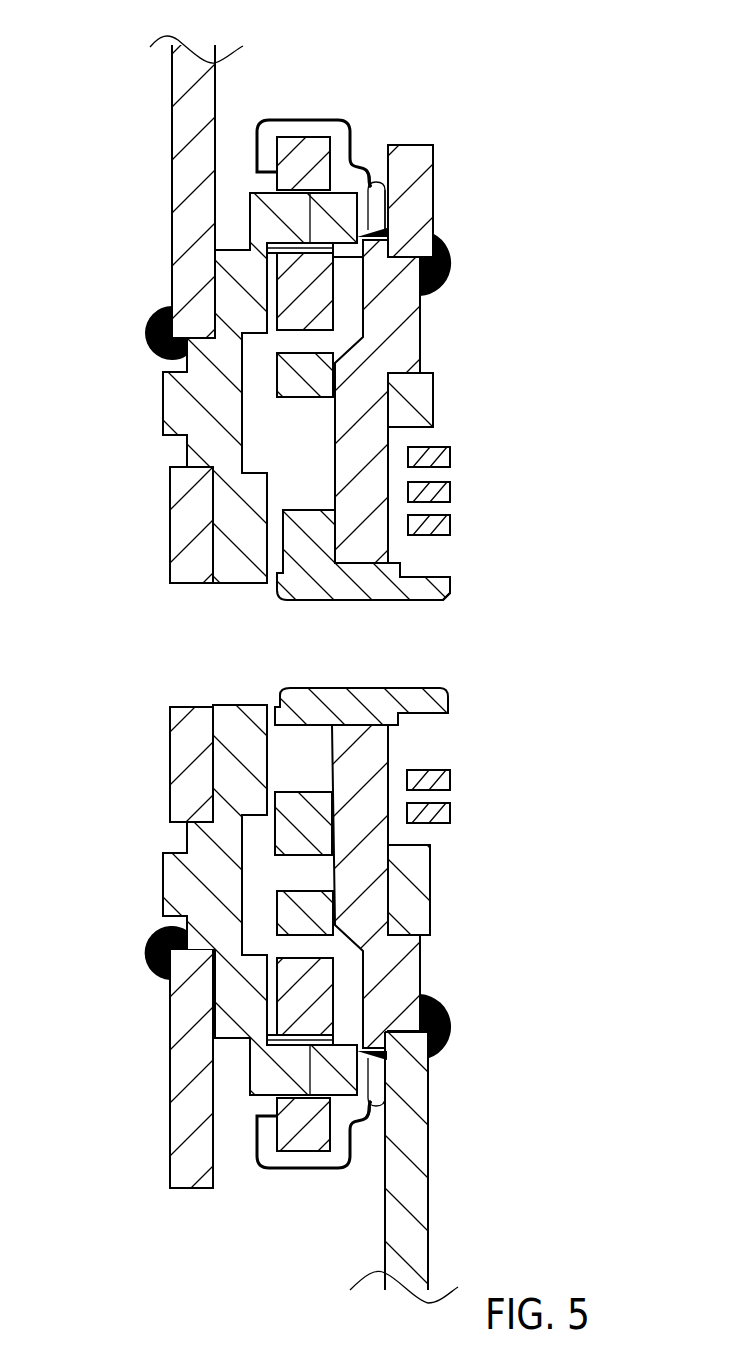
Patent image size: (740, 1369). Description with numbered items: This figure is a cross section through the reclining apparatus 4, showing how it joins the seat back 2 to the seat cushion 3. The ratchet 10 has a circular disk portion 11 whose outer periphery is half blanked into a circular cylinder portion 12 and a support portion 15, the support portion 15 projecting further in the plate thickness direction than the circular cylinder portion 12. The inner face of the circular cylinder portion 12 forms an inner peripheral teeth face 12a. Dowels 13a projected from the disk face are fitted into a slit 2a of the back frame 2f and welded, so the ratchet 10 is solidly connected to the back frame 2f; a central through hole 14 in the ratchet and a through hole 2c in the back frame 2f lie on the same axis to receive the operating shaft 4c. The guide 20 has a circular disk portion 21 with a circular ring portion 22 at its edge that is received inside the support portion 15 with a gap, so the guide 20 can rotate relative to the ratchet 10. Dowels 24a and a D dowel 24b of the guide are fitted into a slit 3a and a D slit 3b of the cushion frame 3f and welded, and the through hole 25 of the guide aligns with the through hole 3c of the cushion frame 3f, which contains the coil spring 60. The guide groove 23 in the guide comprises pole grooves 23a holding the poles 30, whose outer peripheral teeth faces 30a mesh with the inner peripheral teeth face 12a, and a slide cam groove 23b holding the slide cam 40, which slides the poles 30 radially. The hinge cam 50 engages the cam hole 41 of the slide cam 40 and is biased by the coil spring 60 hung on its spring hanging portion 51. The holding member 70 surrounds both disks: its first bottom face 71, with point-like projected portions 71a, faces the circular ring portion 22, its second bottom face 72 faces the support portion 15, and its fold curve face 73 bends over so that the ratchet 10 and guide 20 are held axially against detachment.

The seat back 2 is at (152, 612).
The back frame 2f is at (195, 119).
The slit 2a is at (183, 449).
The through hole 2c is at (193, 669).
The seat cushion 3 is at (446, 1167).
The cushion frame 3f is at (408, 1199).
The slit 3a is at (433, 359).
The D slit 3b is at (430, 944).
The through hole 3c is at (415, 434).
The reclining apparatus 4 is at (375, 66).
The operating shaft 4c is at (417, 555).
The ratchet 10 is at (231, 295).
The circular disk portion 11 is at (237, 512).
The circular cylinder portion 12 is at (276, 220).
The inner peripheral teeth face 12a is at (293, 247).
The dowel 13a is at (180, 398).
The through hole 14 is at (241, 624).
The support portion 15 is at (306, 162).
The guide 20 is at (386, 231).
The circular disk portion 21 is at (368, 489).
The circular ring portion 22 is at (337, 220).
The guide groove 23 is at (426, 626).
The pole groove 23a is at (342, 360).
The slide cam groove 23b is at (328, 744).
The dowel 24a is at (403, 303).
The D dowel 24b is at (397, 986).
The through hole 25 is at (373, 637).
The pole 30 is at (322, 289).
The outer peripheral teeth face 30a is at (293, 200).
The slide cam 40 is at (316, 827).
The cam hole 41 is at (306, 767).
The hinge cam 50 is at (380, 584).
The spring hanging portion 51 is at (429, 588).
The coil spring 60 is at (434, 529).
The holding member 70 is at (370, 160).
The first bottom face 71 is at (389, 183).
The projected portion 71a is at (385, 228).
The second bottom face 72 is at (333, 137).
The fold curve face 73 is at (256, 150).